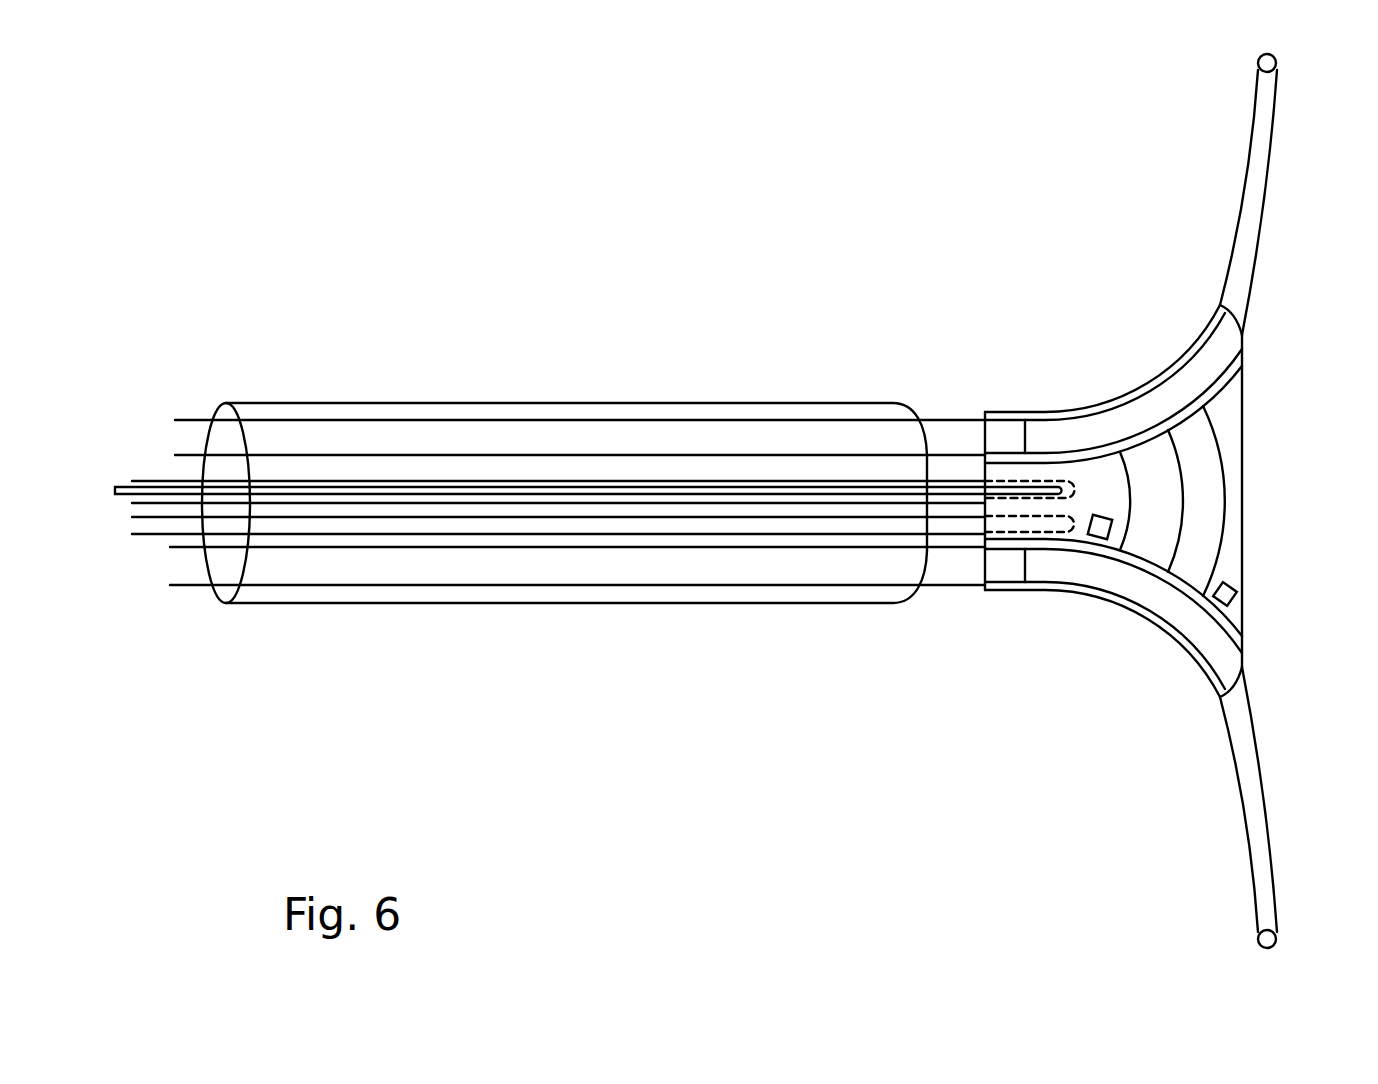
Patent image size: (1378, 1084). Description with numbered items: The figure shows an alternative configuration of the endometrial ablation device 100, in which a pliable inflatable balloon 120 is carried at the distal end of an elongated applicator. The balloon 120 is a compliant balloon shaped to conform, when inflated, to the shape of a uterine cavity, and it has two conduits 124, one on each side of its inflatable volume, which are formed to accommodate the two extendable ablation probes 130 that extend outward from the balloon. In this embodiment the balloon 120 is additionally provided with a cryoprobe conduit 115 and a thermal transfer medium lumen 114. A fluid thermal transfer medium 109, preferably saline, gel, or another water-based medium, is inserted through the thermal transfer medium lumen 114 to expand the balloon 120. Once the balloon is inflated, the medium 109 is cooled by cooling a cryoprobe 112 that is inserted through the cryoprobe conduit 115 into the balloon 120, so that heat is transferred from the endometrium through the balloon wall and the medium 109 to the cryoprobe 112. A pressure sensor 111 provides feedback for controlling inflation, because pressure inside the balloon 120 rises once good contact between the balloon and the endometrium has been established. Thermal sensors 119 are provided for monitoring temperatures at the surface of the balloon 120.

The endometrial ablation device 100 is at (940, 417).
The fluid thermal transfer medium 109 is at (1165, 524).
The pressure sensor 111 is at (1094, 538).
The cryoprobe 112 is at (428, 484).
The thermal transfer medium lumen 114 is at (483, 530).
The cryoprobe conduit 115 is at (483, 502).
The thermal sensors 119 is at (1233, 583).
The pliable inflatable balloon 120 is at (1240, 450).
The conduits 124 is at (1163, 370).
The extendable ablation probes 130 is at (740, 433).